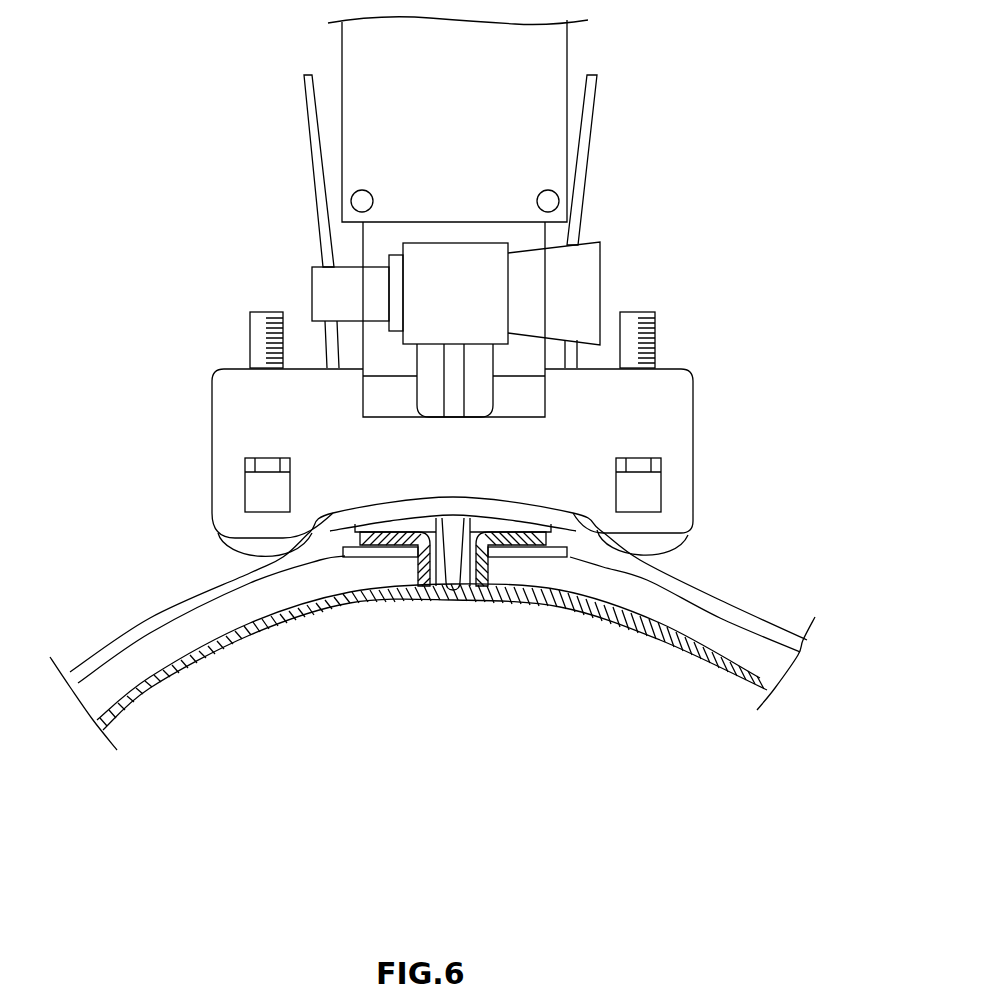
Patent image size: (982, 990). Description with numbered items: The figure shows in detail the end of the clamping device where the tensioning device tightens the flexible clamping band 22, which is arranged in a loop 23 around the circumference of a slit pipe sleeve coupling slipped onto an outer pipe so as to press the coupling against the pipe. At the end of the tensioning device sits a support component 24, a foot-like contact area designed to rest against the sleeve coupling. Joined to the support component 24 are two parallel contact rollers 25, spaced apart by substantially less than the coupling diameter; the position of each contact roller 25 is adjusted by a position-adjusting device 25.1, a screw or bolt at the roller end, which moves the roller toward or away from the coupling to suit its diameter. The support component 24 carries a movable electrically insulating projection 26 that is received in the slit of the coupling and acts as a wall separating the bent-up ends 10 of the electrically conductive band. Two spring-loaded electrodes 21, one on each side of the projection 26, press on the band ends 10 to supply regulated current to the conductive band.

The free ends of the band 10 is at (393, 538).
The electrodes 21 is at (548, 522).
The clamping band 22 is at (590, 155).
The loop 23 is at (727, 603).
The support component 24 is at (517, 508).
The contact rollers 25 is at (237, 545).
The position-adjusting device 25.1 is at (253, 323).
The electrically insulating projection 26 is at (453, 585).